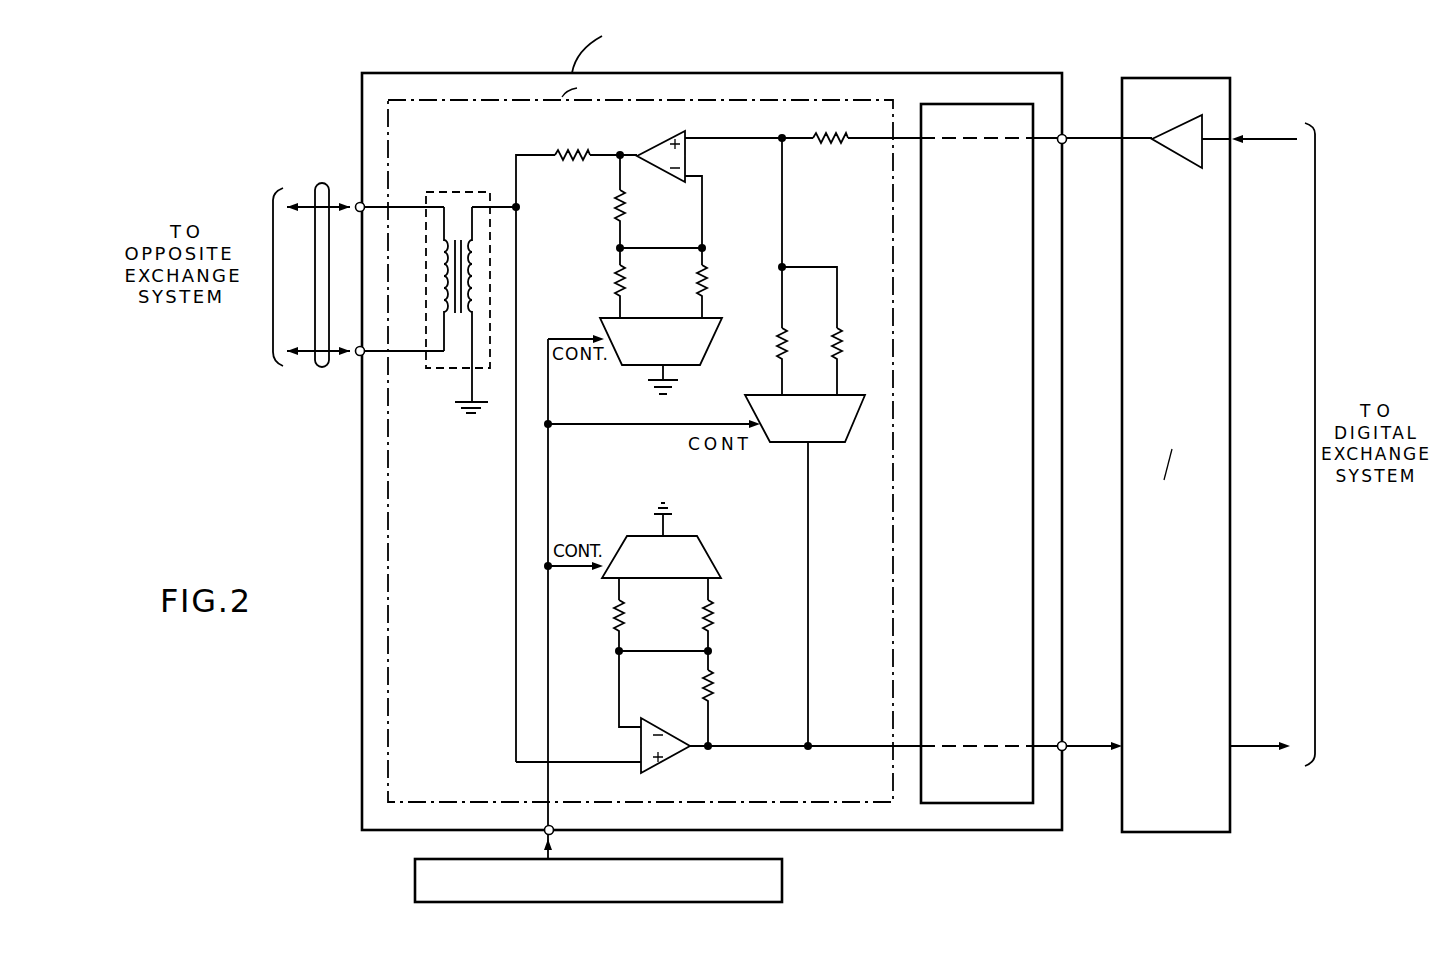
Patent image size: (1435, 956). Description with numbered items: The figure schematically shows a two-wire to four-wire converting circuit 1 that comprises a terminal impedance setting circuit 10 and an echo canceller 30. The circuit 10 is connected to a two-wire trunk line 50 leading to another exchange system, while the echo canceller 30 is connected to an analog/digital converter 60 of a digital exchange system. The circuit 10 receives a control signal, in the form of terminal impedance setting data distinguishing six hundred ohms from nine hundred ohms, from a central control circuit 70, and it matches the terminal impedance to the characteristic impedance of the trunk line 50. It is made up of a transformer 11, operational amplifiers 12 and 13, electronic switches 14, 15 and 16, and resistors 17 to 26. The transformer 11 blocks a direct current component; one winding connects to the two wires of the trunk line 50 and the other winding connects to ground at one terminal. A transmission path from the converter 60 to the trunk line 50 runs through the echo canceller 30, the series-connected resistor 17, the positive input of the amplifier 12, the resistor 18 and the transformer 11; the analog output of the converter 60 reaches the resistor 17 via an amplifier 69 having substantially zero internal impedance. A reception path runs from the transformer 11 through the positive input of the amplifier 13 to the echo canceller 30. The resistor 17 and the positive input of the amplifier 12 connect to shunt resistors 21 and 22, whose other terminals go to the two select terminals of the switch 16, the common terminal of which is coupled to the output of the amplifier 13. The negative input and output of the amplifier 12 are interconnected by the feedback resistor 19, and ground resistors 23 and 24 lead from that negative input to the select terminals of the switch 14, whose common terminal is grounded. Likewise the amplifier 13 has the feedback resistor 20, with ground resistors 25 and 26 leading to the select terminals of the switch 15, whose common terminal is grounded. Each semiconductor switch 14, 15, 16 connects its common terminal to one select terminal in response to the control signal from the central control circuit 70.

The 2 to 4 converting circuit 1 is at (442, 73).
The terminal impedance setting circuit 10 is at (499, 101).
The transformer 11 is at (447, 192).
The operational amplifier 12 is at (668, 138).
The operational amplifier 13 is at (676, 751).
The electronic switch 14 is at (722, 325).
The electronic switch 15 is at (718, 557).
The electronic switch 16 is at (845, 435).
The series-connected resistor 17 is at (841, 147).
The resistor 18 is at (576, 151).
The feedback resistor 19 is at (612, 207).
The feedback resistor 20 is at (712, 679).
The shunt resistor 21 is at (785, 325).
The shunt resistor 22 is at (840, 325).
The ground resistor 23 is at (624, 283).
The ground resistor 24 is at (706, 283).
The ground resistor 25 is at (712, 619).
The ground resistor 26 is at (622, 619).
The echo canceller 30 is at (1027, 104).
The trunk line 50 is at (322, 370).
The analog/digital converter 60 is at (1200, 78).
The amplifier 69 is at (1185, 163).
The central control circuit 70 is at (783, 874).